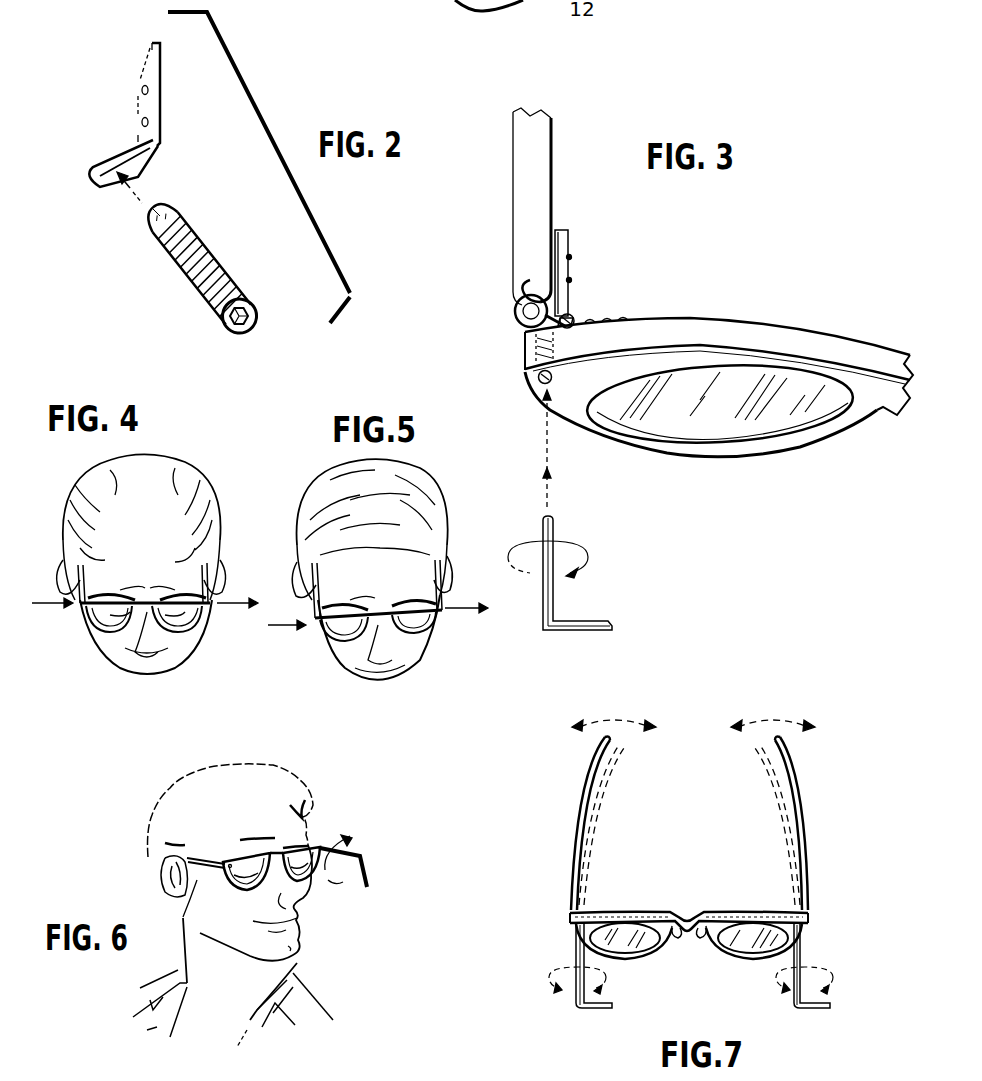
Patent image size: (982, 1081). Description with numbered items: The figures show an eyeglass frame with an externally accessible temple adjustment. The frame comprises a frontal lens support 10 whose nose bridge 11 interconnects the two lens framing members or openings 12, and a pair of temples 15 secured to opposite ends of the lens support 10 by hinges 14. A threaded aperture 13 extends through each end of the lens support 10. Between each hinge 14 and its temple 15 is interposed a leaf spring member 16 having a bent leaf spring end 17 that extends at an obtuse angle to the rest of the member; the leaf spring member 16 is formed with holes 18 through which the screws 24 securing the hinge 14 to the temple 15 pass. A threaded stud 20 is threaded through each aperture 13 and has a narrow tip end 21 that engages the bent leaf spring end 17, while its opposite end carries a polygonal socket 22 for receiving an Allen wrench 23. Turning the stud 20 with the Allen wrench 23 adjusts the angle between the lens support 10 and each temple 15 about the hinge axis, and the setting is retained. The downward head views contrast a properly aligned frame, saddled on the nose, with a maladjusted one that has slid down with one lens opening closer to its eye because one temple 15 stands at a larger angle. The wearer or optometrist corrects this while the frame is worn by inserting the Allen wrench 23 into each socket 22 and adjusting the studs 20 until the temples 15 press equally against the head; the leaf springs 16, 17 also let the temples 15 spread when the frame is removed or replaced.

In FIG. 3, the frontal lens support 10 is at (760, 324).
In FIG. 4, the frontal lens support 10 is at (90, 615).
In FIG. 5, the frontal lens support 10 is at (325, 628).
In FIG. 6, the frontal lens support 10 is at (320, 882).
In FIG. 7, the frontal lens support 10 is at (645, 910).
In FIG. 7, the nose bridge 11 is at (700, 930).
In FIG. 3, the lens framing members 12 is at (720, 404).
In FIG. 4, the lens framing members 12 is at (195, 618).
In FIG. 5, the lens framing members 12 is at (432, 628).
In FIG. 7, the lens framing members 12 is at (745, 948).
In FIG. 3, the threaded apertures 13 is at (538, 378).
In FIG. 3, the hinges 14 is at (566, 300).
In FIG. 3, the temples 15 is at (540, 158).
In FIG. 4, the temples 15 is at (212, 590).
In FIG. 5, the temples 15 is at (440, 598).
In FIG. 6, the temples 15 is at (202, 902).
In FIG. 7, the temples 15 is at (805, 832).
In FIG. 2, the leaf spring member 16 is at (157, 104).
In FIG. 3, the leaf spring member 16 is at (560, 234).
In FIG. 2, the bent leaf spring end 17 is at (130, 162).
In FIG. 3, the bent leaf spring end 17 is at (528, 297).
In FIG. 2, the holes 18 is at (140, 122).
In FIG. 2, the threaded stud 20 is at (228, 257).
In FIG. 3, the threaded stud 20 is at (522, 314).
In FIG. 2, the narrow tip end 21 is at (163, 208).
In FIG. 3, the narrow tip end 21 is at (578, 313).
In FIG. 2, the polygonal socket 22 is at (258, 315).
In FIG. 3, the Allen wrench 23 is at (556, 602).
In FIG. 6, the Allen wrench 23 is at (370, 870).
In FIG. 7, the Allen wrench 23 is at (818, 1003).
In FIG. 3, the screws 24 is at (573, 281).